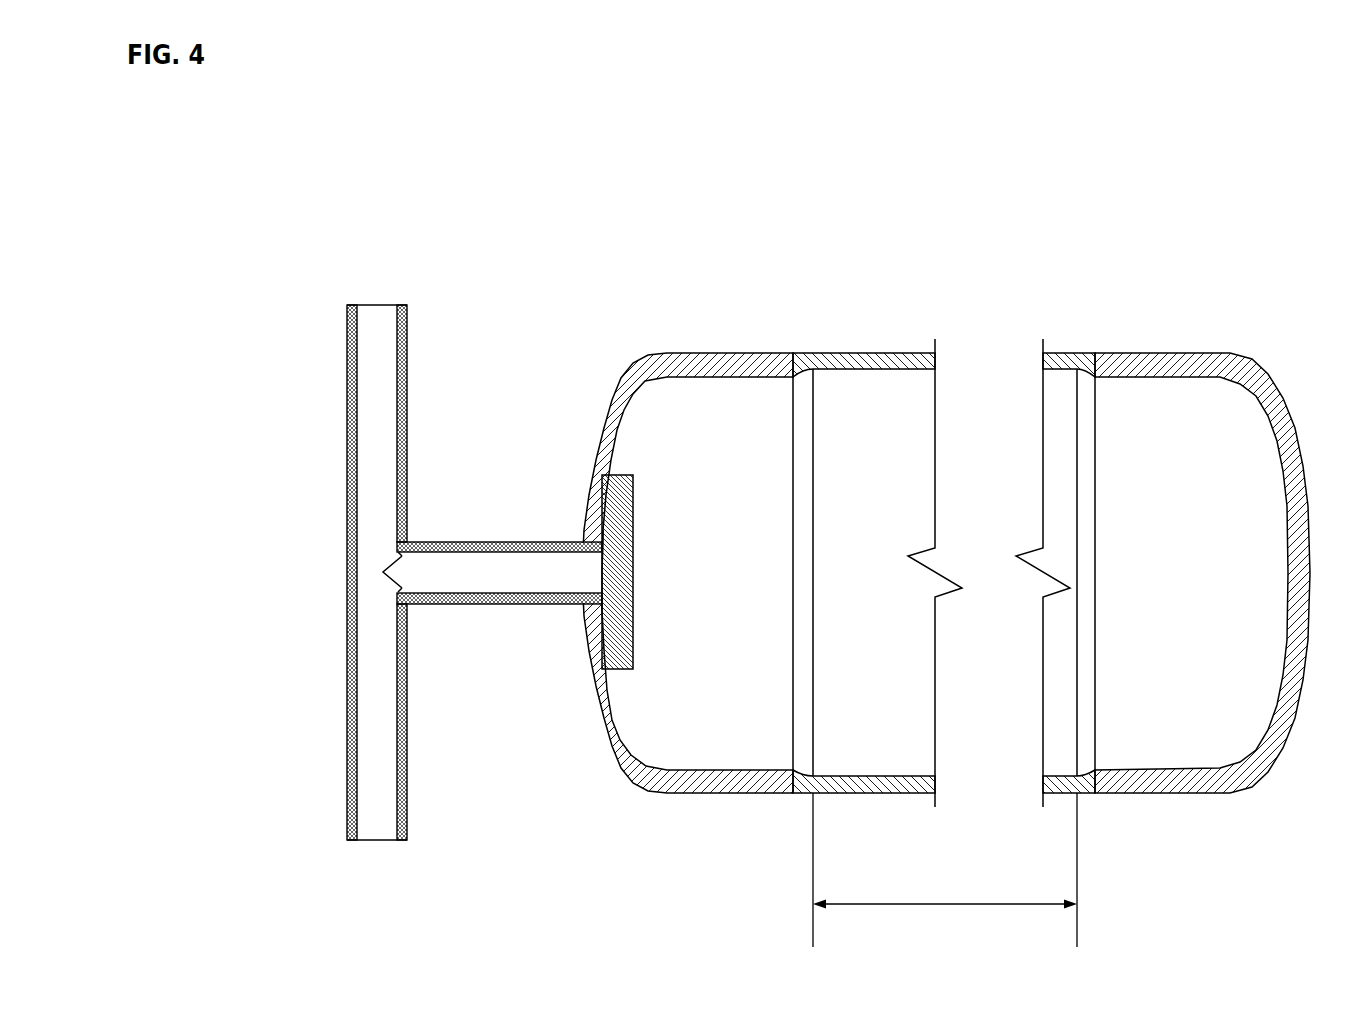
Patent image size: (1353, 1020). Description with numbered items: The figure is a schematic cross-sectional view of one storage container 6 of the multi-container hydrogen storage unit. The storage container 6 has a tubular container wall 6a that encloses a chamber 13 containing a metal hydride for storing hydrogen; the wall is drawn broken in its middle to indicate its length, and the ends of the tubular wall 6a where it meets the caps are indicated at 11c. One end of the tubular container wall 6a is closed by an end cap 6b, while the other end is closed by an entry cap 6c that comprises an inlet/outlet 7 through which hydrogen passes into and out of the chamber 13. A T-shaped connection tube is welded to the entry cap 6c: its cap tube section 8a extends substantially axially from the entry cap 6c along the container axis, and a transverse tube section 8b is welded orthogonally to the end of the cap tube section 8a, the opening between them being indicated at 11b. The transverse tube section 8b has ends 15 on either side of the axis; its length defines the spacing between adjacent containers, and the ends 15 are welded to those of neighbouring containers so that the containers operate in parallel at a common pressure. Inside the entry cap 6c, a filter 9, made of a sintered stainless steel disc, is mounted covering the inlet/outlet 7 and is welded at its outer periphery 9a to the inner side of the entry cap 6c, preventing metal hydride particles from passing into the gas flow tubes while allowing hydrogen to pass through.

The storage container 6 is at (1230, 273).
The tubular container wall 6a is at (890, 794).
The end cap 6b is at (1182, 794).
The entry cap 6c is at (761, 794).
The inlet/outlet 7 is at (596, 573).
The cap tube section 8a is at (524, 543).
The transverse tube section 8b is at (347, 688).
The filter 9 is at (636, 561).
The outer periphery 9a is at (603, 715).
The opening 11b is at (398, 573).
The end of cylindrical portion 11c is at (813, 370).
The chamber 13 is at (887, 412).
The ends 15 is at (374, 305).